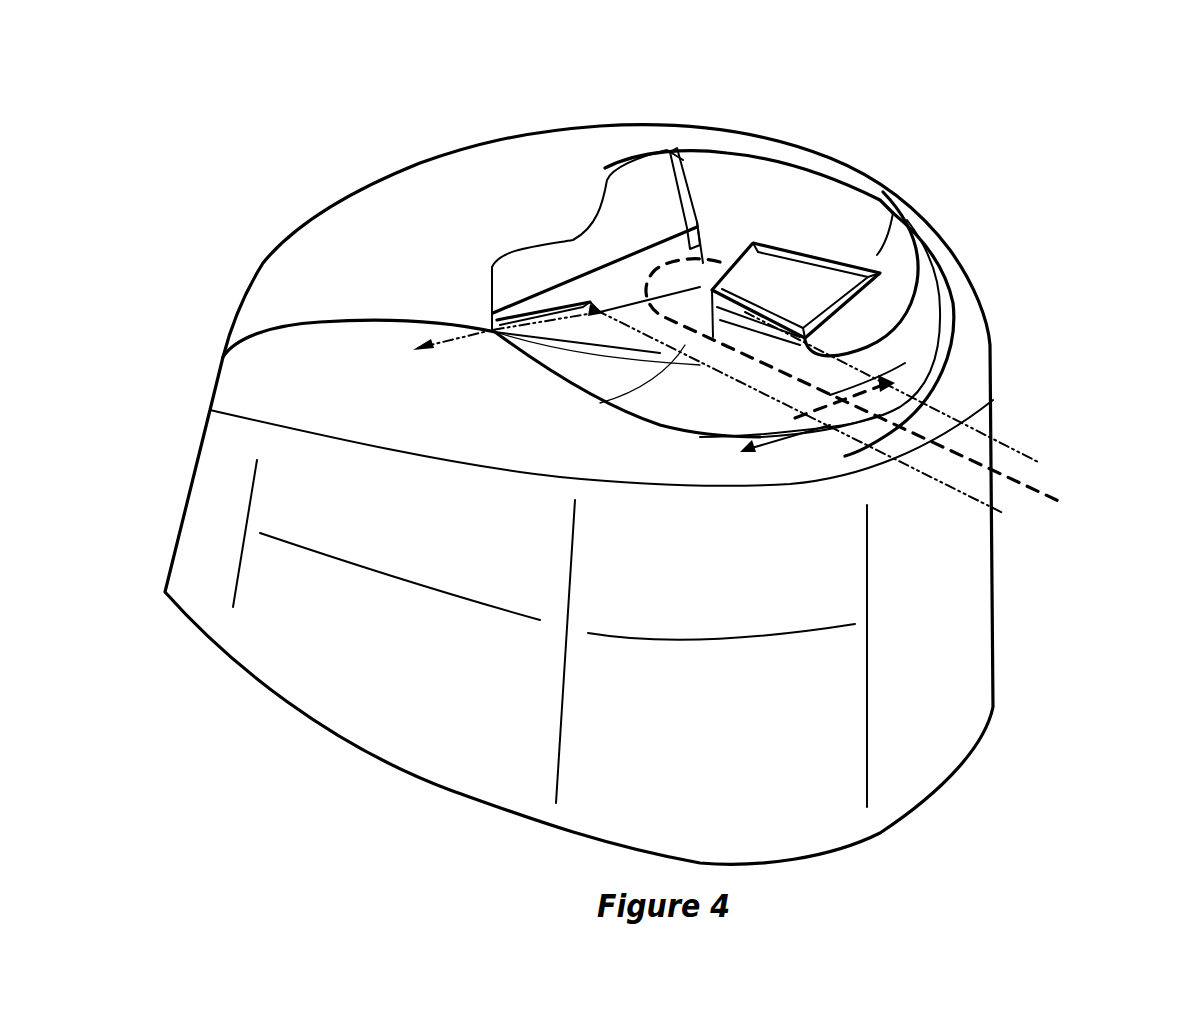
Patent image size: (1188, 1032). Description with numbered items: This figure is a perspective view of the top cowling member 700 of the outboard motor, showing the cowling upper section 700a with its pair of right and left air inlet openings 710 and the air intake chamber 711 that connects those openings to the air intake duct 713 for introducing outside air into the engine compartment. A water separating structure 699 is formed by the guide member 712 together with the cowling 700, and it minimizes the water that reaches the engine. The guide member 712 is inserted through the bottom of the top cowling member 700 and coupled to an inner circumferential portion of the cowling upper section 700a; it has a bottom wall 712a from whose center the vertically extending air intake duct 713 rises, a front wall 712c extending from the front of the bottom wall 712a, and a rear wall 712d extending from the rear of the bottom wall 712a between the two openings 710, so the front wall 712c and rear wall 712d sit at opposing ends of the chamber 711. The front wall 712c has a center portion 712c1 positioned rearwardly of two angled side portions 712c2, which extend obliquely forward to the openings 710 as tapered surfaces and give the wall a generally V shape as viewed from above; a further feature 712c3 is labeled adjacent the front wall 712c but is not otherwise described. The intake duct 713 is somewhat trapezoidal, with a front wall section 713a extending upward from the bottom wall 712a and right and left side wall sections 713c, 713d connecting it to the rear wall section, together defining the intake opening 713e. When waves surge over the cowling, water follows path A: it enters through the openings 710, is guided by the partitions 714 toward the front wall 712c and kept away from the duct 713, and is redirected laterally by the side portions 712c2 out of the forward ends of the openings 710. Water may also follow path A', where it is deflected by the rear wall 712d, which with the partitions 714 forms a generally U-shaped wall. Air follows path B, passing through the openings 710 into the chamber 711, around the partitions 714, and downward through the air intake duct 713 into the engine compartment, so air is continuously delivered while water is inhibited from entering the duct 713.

The top cowling member 700 is at (1016, 240).
The cowling upper section 700a is at (906, 217).
The water separating structure 699 is at (893, 227).
The air inlet openings 710 is at (918, 270).
The partitions 714 is at (800, 322).
The rear wall 712d is at (905, 363).
The guide member 712 is at (637, 266).
The front wall 712c is at (573, 265).
The center portion 712c1 is at (713, 253).
The side portions 712c2 is at (703, 237).
The sliding direction line 712c3 is at (482, 333).
The air intake chamber 711 is at (640, 313).
The bottom wall 712a is at (677, 353).
The air intake duct 713 is at (805, 283).
The front wall section 713a is at (765, 289).
The right side wall section 713c is at (740, 410).
The left side wall section 713d is at (818, 278).
The intake opening 713e is at (777, 290).
The path A is at (843, 506).
The path A' is at (921, 387).
The path B is at (1060, 505).